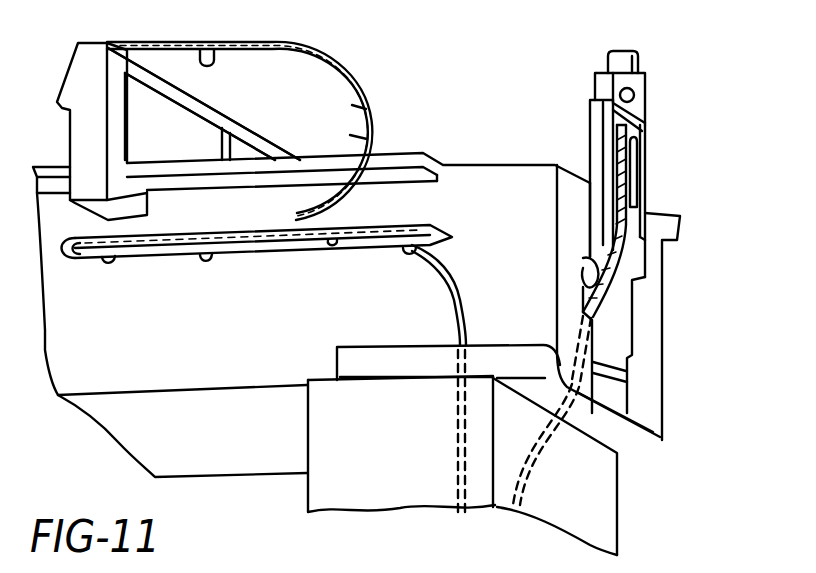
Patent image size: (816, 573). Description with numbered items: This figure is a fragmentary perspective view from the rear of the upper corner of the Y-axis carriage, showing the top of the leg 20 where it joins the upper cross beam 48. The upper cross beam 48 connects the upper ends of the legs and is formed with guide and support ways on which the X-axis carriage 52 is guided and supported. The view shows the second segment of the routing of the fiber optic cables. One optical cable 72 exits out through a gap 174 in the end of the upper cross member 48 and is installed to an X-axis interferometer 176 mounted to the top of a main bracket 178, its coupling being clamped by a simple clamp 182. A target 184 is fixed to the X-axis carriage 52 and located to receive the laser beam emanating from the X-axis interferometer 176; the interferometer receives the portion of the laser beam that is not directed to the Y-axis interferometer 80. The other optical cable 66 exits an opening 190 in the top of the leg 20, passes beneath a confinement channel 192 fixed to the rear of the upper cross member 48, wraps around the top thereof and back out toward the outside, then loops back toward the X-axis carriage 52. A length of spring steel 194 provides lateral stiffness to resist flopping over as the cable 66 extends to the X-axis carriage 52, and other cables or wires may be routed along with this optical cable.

The leg 20 is at (580, 500).
The upper cross beam 48 is at (535, 215).
The X-axis carriage 52 is at (295, 80).
The optical cable 66 is at (208, 47).
The optical cable 72 is at (606, 290).
The Y-axis interferometer 80 is at (619, 122).
The gap 174 is at (582, 268).
The X-axis interferometer 176 is at (710, 33).
The main bracket 178 is at (598, 150).
The clamp 182 is at (646, 110).
The target 184 is at (248, 138).
The opening 190 is at (388, 374).
The confinement channel 192 is at (337, 235).
The length of spring steel 194 is at (362, 108).